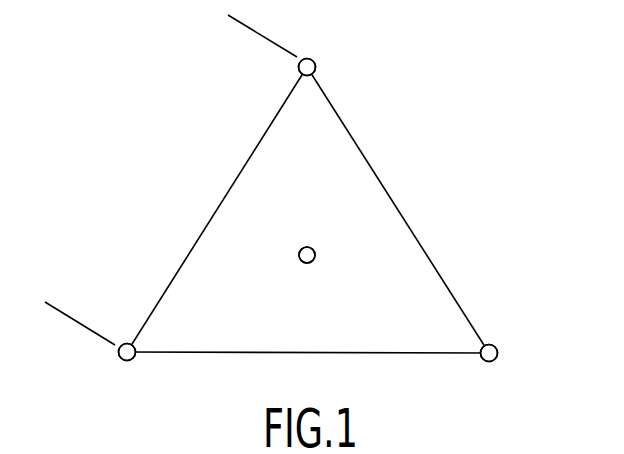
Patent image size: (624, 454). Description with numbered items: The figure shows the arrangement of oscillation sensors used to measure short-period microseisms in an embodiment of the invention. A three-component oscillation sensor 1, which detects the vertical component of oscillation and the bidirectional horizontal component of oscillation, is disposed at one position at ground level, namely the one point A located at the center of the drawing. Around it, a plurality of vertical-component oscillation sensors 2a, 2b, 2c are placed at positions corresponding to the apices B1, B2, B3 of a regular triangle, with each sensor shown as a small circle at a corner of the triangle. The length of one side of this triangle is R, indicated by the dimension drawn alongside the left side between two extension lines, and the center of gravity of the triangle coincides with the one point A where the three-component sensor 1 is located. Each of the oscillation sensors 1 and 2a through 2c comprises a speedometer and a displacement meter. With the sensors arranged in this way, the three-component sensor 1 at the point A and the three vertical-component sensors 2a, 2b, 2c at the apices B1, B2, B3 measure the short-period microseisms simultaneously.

The three-component oscillation sensor 1 is at (314, 256).
The one point A is at (307, 263).
The vertical-component oscillation sensor 2a is at (496, 348).
The vertical-component oscillation sensor 2b is at (317, 70).
The vertical-component oscillation sensor 2c is at (127, 361).
The apex of regular triangle B1 is at (494, 359).
The apex of regular triangle B2 is at (310, 61).
The apex of regular triangle B3 is at (120, 356).
The length of one side R is at (65, 312).